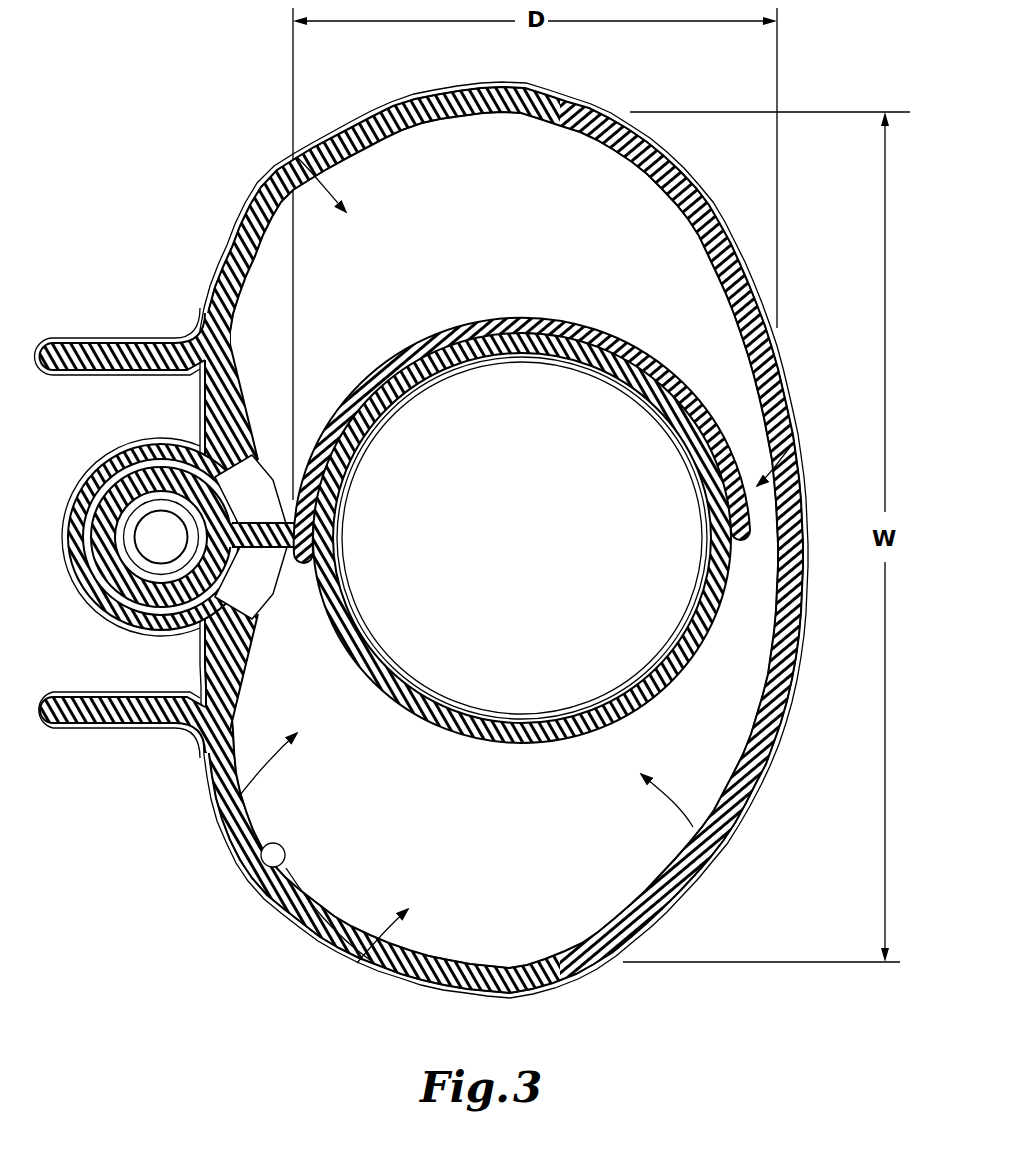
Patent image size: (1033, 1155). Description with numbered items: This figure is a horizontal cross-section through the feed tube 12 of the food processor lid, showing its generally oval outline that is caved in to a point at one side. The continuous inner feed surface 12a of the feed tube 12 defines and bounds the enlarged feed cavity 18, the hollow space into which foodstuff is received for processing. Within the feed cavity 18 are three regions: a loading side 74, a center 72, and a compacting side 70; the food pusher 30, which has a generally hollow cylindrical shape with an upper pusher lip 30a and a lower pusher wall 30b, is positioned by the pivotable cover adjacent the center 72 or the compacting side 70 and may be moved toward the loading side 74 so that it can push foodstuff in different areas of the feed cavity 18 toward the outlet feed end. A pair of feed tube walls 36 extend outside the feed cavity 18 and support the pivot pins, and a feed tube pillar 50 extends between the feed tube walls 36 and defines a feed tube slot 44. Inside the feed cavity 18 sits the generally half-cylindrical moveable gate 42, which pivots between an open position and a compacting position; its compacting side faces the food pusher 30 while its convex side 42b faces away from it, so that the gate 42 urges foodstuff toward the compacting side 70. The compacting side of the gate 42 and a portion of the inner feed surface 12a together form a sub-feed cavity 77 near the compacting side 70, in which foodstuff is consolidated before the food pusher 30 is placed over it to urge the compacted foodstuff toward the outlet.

The feed tube 12 is at (563, 108).
The inner feed surface 12a is at (240, 867).
The feed cavity 18 is at (713, 840).
The food pusher 30 is at (590, 544).
The upper pusher lip 30a is at (683, 670).
The lower pusher wall 30b is at (650, 563).
The feed tube walls 36 is at (107, 350).
The moveable gate 42 is at (569, 382).
The convex side 42b is at (540, 313).
The feed tube slot 44 is at (103, 580).
The feed tube pillar 50 is at (107, 457).
The compacting side 70 is at (373, 947).
The center 72 is at (795, 450).
The loading side 74 is at (292, 155).
The sub-feed cavity 77 is at (230, 793).